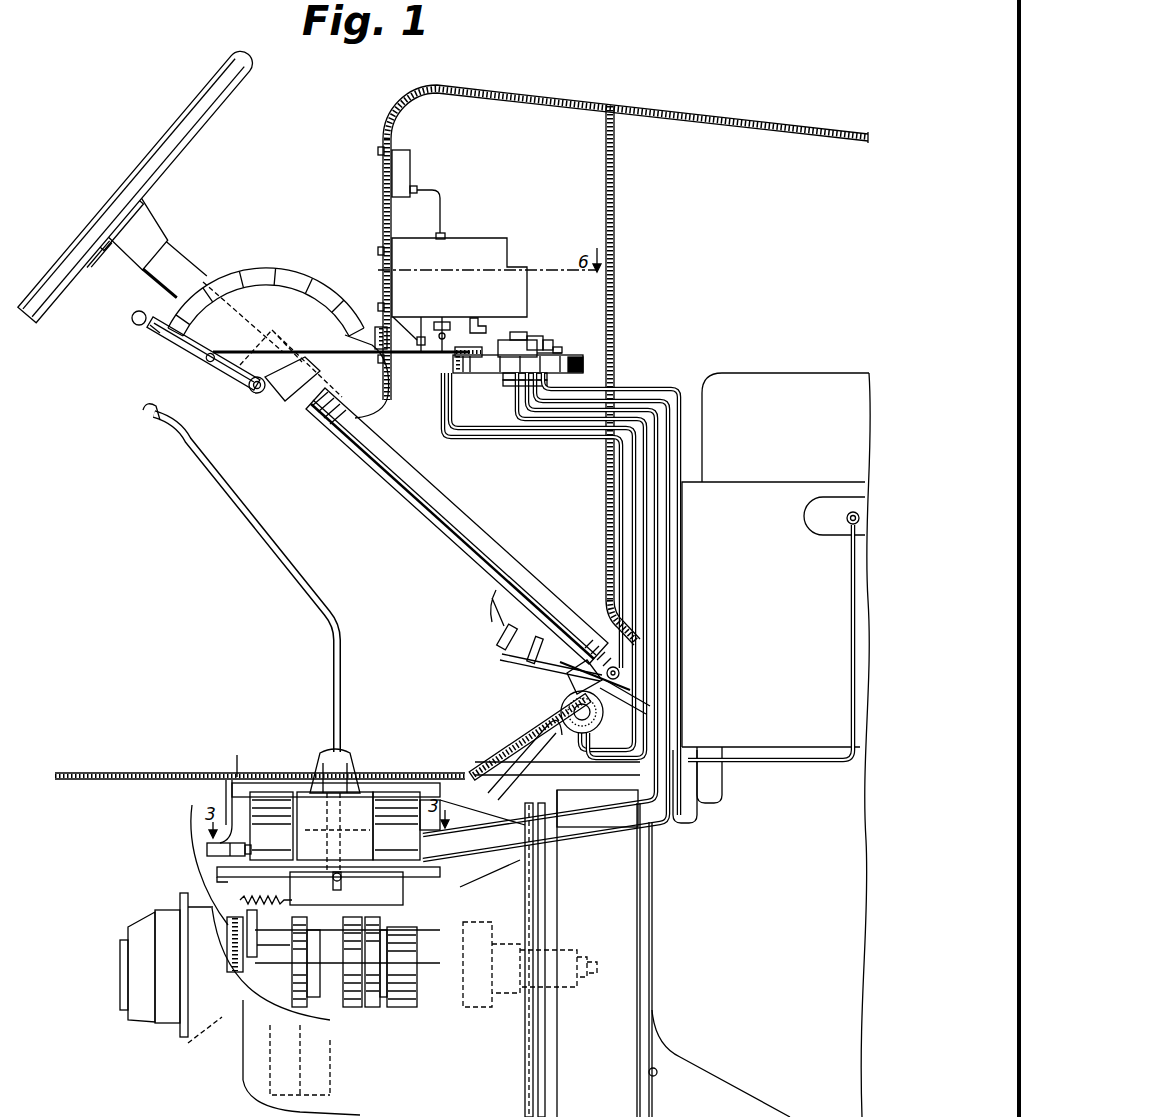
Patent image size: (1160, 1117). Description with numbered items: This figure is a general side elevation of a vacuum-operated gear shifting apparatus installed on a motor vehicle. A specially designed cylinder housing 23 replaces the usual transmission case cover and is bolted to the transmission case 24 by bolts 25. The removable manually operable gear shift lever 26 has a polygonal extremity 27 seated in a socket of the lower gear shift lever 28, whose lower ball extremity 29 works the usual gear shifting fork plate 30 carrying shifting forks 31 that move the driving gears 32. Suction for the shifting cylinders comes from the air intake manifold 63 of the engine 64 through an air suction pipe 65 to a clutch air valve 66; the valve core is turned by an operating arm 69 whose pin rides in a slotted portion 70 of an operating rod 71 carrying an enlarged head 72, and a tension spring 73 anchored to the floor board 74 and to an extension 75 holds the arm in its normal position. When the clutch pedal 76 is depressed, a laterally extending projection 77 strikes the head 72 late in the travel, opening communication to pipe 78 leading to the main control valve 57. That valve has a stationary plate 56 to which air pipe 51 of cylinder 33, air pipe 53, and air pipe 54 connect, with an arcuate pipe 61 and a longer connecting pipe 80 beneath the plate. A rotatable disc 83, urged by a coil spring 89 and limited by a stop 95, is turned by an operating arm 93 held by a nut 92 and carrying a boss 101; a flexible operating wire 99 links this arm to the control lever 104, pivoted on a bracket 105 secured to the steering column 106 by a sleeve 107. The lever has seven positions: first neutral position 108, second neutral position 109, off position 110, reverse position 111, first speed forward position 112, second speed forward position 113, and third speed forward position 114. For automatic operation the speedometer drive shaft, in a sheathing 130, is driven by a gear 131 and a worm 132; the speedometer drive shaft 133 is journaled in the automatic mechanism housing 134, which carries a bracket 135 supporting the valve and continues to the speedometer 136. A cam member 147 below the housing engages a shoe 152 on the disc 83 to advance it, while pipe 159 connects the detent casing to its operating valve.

The cylinder housing 23 is at (354, 806).
The transmission case 24 is at (288, 1086).
The bolts 25 is at (226, 869).
The manually operable gear shift lever 26 is at (285, 560).
The polygonal extremity 27 is at (341, 751).
The lower gear shift lever 28 is at (330, 832).
The lower ball extremity 29 is at (333, 878).
The gear shifting fork plate 30 is at (321, 888).
The shifting forks 31 is at (309, 917).
The driving gears 32 is at (292, 934).
The cylinder 33 is at (335, 826).
The air pipe 51 is at (590, 393).
The air pipe 53 is at (478, 404).
The air pipe 54 is at (585, 392).
The stationary plate 56 is at (481, 384).
The main control valve 57 is at (608, 387).
The arcuate pipe 61 is at (533, 392).
The air intake manifold 63 is at (803, 512).
The engine 64 is at (776, 745).
The air suction pipe 65 is at (850, 677).
The clutch air valve 66 is at (558, 695).
The operating arm 69 is at (540, 683).
The slotted portion 70 is at (652, 709).
The operating rod 71 is at (556, 662).
The enlarged head 72 is at (520, 665).
The tension spring 73 is at (611, 610).
The floor board 74 is at (500, 727).
The extension 75 is at (622, 676).
The clutch pedal 76 is at (502, 648).
The laterally extending projection 77 is at (490, 624).
The pipe 78 is at (664, 634).
The connecting pipe 80 is at (540, 392).
The disc 83 is at (588, 359).
The coil spring 89 is at (545, 353).
The nut 92 is at (540, 338).
The operating arm 93 is at (517, 332).
The stop 95 is at (487, 346).
The operating wire 99 is at (367, 347).
The boss 101 is at (458, 372).
The control lever 104 is at (148, 329).
The bracket 105 is at (181, 354).
The steering column 106 is at (364, 455).
The sleeve 107 is at (282, 392).
The first neutral position 108 is at (163, 318).
The second neutral position 109 is at (190, 302).
The off position 110 is at (225, 272).
The reverse position 111 is at (268, 267).
The first speed forward position 112 is at (299, 272).
The second speed forward position 113 is at (333, 290).
The third speed forward position 114 is at (352, 326).
The sheathing 130 is at (190, 810).
The gear 131 is at (224, 918).
The worm 132 is at (208, 1039).
The speedometer drive shaft 133 is at (445, 322).
The automatic mechanism housing 134 is at (487, 236).
The bracket 135 is at (421, 330).
The speedometer 136 is at (405, 158).
The cam member 147 is at (474, 338).
The shoe 152 is at (553, 341).
The pipe 159 is at (660, 390).